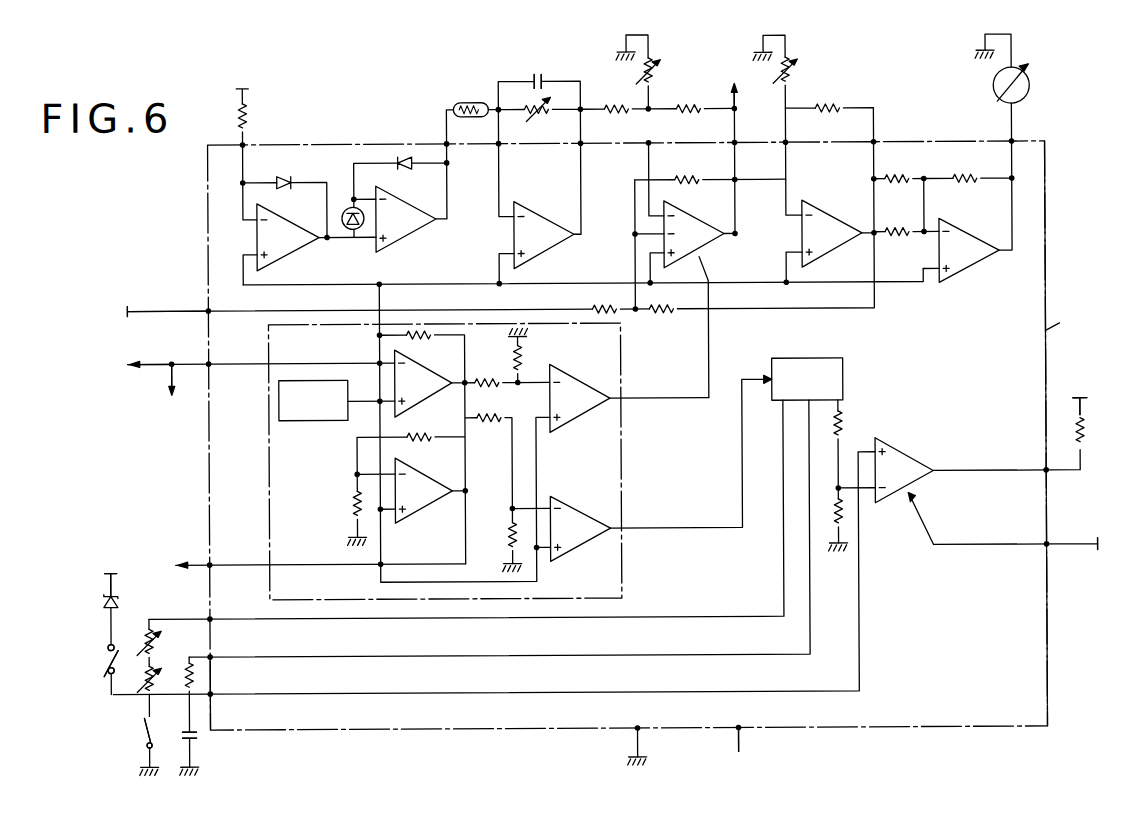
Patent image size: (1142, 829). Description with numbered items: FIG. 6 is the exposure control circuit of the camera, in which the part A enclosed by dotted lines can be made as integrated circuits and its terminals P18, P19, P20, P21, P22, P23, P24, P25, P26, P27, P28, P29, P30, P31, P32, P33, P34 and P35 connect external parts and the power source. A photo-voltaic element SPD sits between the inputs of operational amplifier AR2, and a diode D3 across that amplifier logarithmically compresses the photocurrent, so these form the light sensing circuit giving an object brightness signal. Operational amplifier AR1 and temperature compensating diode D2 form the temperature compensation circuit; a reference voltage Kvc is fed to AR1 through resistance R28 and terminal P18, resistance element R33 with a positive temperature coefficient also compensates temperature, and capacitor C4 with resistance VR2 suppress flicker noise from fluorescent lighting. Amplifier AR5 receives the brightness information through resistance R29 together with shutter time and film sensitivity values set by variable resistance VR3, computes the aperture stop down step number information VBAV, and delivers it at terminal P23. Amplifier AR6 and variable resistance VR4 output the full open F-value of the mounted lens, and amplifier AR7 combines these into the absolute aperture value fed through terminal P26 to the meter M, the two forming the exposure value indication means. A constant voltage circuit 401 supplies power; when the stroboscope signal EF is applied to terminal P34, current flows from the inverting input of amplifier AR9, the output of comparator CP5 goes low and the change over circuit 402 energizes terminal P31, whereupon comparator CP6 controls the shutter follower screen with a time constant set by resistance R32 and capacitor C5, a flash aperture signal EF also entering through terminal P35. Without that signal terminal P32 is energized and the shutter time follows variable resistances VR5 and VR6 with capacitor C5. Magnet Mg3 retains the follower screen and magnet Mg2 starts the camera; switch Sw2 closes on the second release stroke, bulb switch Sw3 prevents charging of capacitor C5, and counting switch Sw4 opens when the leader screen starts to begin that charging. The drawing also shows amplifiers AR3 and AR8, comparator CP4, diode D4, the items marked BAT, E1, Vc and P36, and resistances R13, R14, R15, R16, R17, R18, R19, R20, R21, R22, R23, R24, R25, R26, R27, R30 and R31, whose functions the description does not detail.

The reference voltage Kvc is at (198, 326).
The resistance R28 is at (258, 117).
The terminal P18 is at (259, 157).
The temperature compensating diode D2 is at (283, 177).
The operational amplifier AR1 is at (288, 237).
The photo-voltaic element SPD is at (353, 235).
The diode D3 is at (406, 174).
The operational amplifier AR2 is at (406, 219).
The terminal P19 is at (463, 156).
The resistance element R33 is at (470, 101).
The capacitor C4 is at (539, 72).
The resistance VR2 is at (542, 116).
The terminal P20 is at (515, 156).
The terminal P21 is at (597, 155).
The operational amplifier AR3 is at (544, 234).
The resistance R29 is at (619, 121).
The variable resistance VR3 is at (661, 73).
The resistor R30 is at (691, 121).
The aperture stop down step number information VBAV is at (735, 86).
The terminal P22 is at (665, 155).
The terminal P23 is at (751, 154).
The resistor R22 is at (690, 172).
The operational amplifier AR5 is at (694, 234).
The variable resistance VR4 is at (798, 72).
The resistor R31 is at (830, 120).
The terminal P24 is at (802, 154).
The terminal P25 is at (890, 154).
The amplifier AR6 is at (832, 233).
The resistor R23 is at (900, 188).
The resistor R25 is at (968, 187).
The resistor R24 is at (900, 242).
The operational amplifier AR7 is at (969, 250).
The terminal P26 is at (1028, 153).
The meter M is at (1019, 83).
The resistor R20 is at (608, 301).
The resistor R21 is at (665, 320).
The terminal P35 is at (224, 303).
The signal for stroboscope EF is at (150, 315).
The part enclosed by dotted lines A is at (1047, 332).
The terminal P34 is at (225, 356).
The control voltage terminal Vc is at (137, 388).
The constant voltage circuit 401 is at (313, 400).
The resistor R13 is at (422, 345).
The amplifier AR9 is at (423, 383).
The resistor R16 is at (491, 375).
The resistor R17 is at (533, 357).
The comparator CP4 is at (580, 398).
The resistor R18 is at (493, 432).
The resistor R15 is at (423, 430).
The resistor R14 is at (345, 504).
The operational amplifier AR8 is at (423, 490).
The resistor R19 is at (497, 535).
The comparator CP5 is at (580, 528).
The change over circuit 402 is at (807, 379).
The resistor R26 is at (854, 423).
The resistor R27 is at (827, 511).
The comparator CP6 is at (904, 469).
The terminal P27 is at (1038, 461).
The battery BAT is at (1079, 395).
The magnet Mg3 is at (1066, 431).
The terminal P28 is at (1034, 535).
The magnet Mg2 is at (1116, 545).
The terminal P33 is at (226, 556).
The circuit terminal P32 is at (226, 611).
The circuit terminal P31 is at (226, 649).
The terminal P30 is at (226, 686).
The switch Sw2 is at (113, 577).
The zener diode D4 is at (124, 603).
The bulb switch Sw3 is at (98, 661).
The variable resistance VR5 is at (165, 643).
The variable resistance VR6 is at (139, 679).
The resistance R32 is at (180, 680).
The counting switch Sw4 is at (165, 733).
The capacitor C5 is at (199, 745).
The terminal P29 is at (644, 719).
The terminal P36 is at (744, 718).
The power source E1 is at (743, 751).